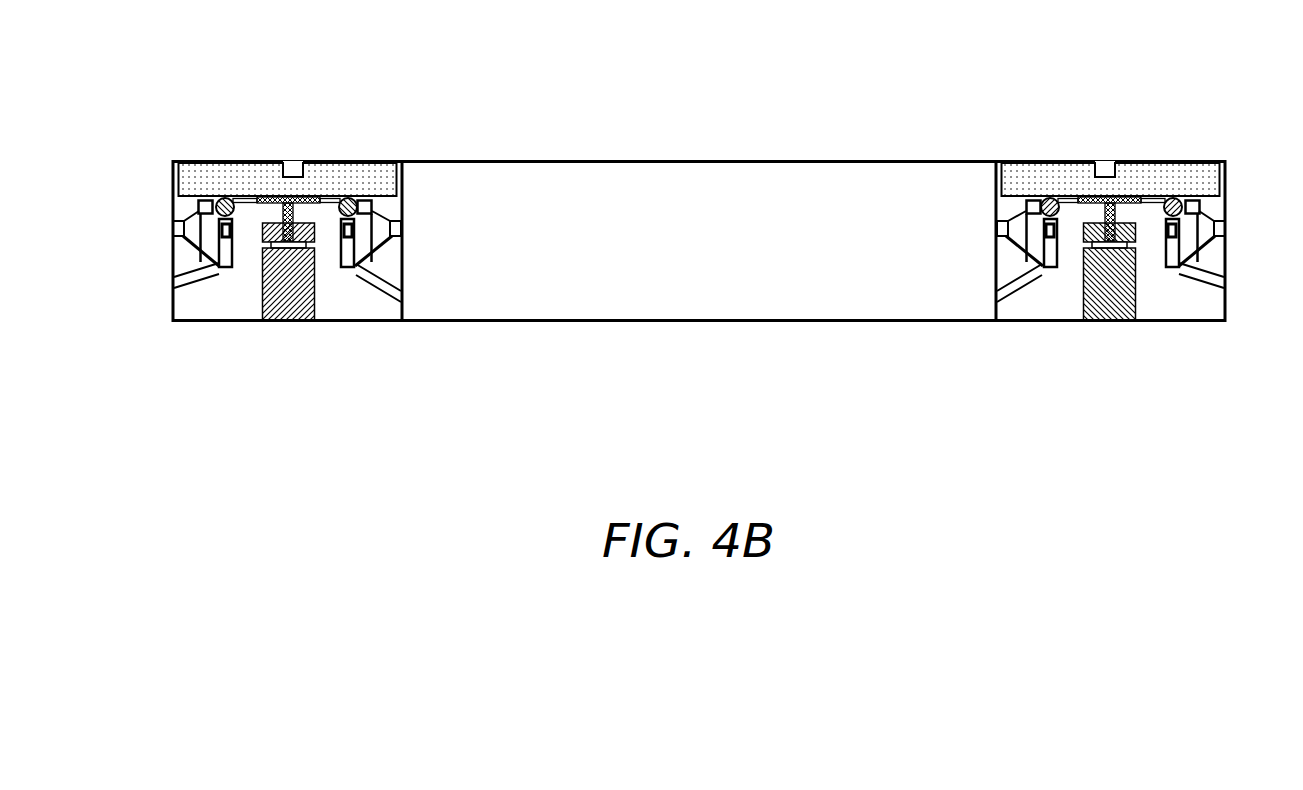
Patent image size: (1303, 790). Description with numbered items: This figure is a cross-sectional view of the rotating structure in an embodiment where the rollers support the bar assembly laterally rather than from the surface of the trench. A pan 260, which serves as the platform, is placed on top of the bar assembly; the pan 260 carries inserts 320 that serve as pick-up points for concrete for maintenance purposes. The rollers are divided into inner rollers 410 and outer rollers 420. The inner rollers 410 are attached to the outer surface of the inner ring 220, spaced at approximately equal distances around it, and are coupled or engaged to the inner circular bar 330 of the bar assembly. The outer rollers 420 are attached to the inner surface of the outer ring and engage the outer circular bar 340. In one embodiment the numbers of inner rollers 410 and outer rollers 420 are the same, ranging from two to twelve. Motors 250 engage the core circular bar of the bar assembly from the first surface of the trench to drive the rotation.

The inner ring 220 is at (760, 310).
The motor 250 is at (290, 308).
The pan 260 is at (192, 164).
The insert 320 is at (1118, 97).
The inner circular bar 330 is at (349, 197).
The outer circular bar 340 is at (226, 197).
The inner roller 410 is at (385, 283).
The outer roller 420 is at (188, 278).